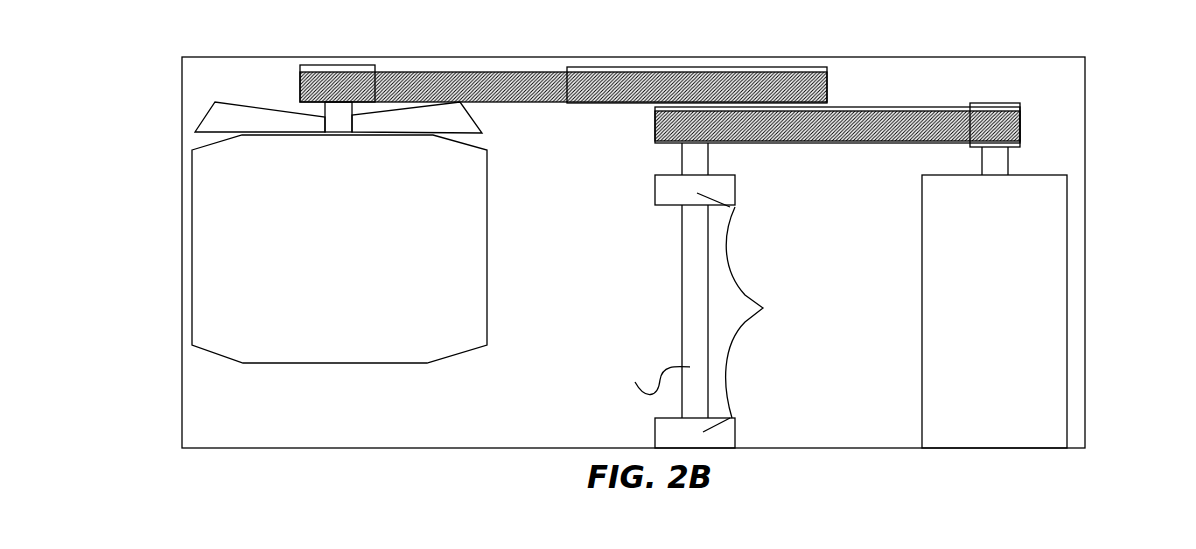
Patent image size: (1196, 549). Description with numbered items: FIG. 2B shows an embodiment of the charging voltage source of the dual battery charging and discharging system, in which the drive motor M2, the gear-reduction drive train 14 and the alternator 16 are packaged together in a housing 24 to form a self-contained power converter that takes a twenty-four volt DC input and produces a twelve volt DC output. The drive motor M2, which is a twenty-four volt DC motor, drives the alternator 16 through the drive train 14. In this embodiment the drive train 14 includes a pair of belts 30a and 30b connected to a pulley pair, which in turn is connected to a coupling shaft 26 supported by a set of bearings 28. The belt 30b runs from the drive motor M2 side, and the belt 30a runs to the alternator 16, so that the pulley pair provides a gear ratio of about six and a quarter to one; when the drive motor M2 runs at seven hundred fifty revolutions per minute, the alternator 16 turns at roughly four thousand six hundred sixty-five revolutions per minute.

The gear-reduction drive train 14 is at (856, 71).
The alternator 16 is at (198, 208).
The housing 24 is at (1087, 353).
The coupling shaft 26 is at (680, 297).
The bearings 28 is at (735, 192).
The belt 30a is at (616, 94).
The belt 30b is at (898, 110).
The drive motor M2 is at (1068, 282).